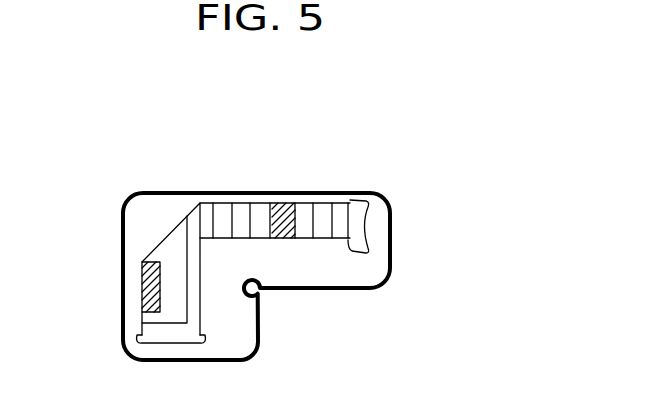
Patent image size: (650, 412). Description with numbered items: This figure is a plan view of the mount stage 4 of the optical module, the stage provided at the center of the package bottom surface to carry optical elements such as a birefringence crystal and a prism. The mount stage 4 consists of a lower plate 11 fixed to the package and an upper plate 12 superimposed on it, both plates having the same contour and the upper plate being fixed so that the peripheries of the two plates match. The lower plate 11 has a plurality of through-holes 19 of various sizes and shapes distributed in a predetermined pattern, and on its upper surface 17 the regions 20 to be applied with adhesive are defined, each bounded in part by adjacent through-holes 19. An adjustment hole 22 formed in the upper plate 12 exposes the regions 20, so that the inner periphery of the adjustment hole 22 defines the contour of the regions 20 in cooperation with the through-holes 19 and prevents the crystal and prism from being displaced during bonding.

The mount stage 4 is at (432, 181).
The lower plate 11 is at (242, 212).
The upper plate 12 is at (392, 246).
The upper surface 17 is at (202, 210).
The through-holes 19 is at (221, 212).
The regions to be applied with adhesive 20 is at (287, 215).
The adjustment hole 22 is at (190, 218).